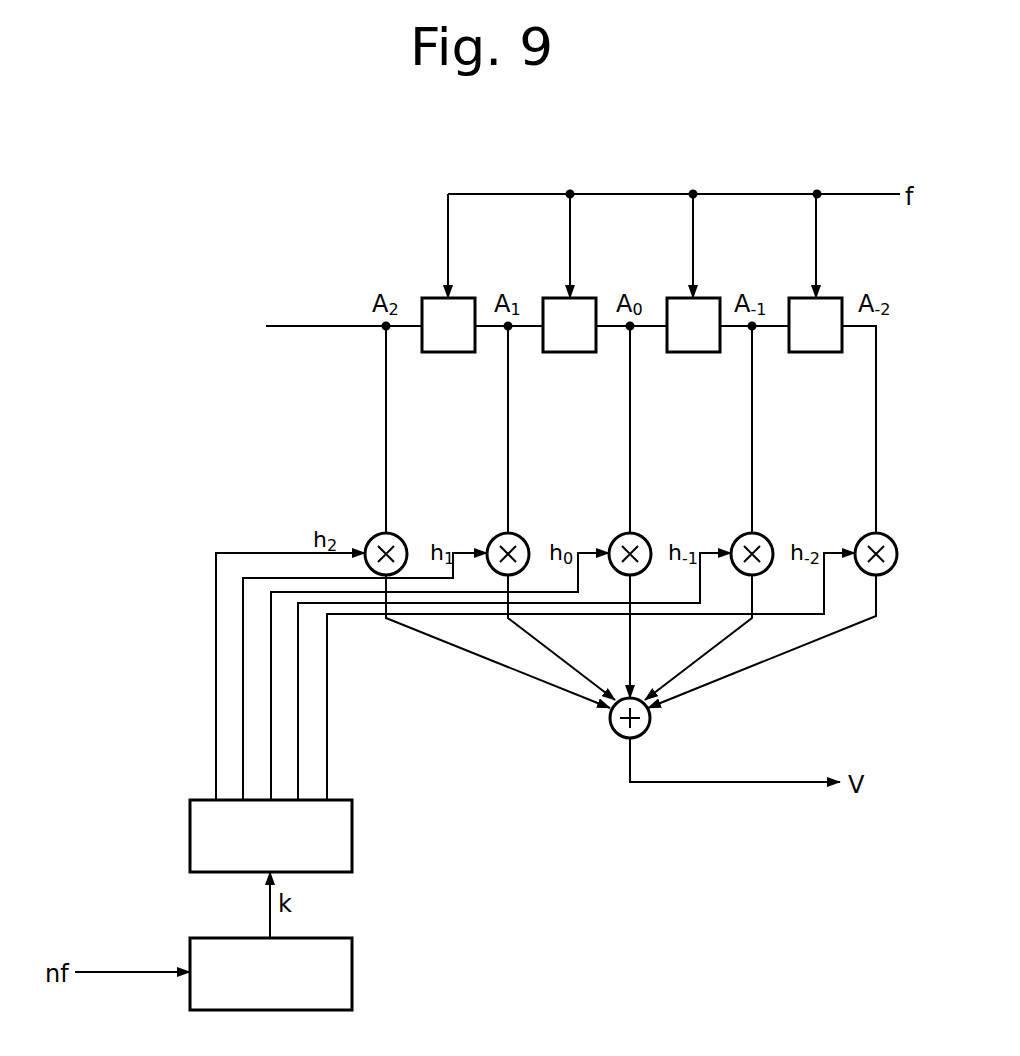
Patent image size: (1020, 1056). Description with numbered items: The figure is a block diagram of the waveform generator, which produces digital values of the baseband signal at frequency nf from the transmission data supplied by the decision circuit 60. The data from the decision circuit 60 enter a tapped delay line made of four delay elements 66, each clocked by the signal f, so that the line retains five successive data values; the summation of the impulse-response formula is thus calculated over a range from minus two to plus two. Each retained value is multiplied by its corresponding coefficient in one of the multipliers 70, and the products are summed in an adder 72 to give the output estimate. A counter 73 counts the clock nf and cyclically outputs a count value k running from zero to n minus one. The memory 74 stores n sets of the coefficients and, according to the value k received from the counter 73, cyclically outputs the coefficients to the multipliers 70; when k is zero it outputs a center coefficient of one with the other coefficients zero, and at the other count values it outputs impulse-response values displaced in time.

The decision circuit 60 is at (269, 327).
The delay element 66 is at (827, 372).
The multiplier 70 is at (896, 516).
The adder 72 is at (648, 726).
The counter 73 is at (352, 952).
The memory 74 is at (337, 800).